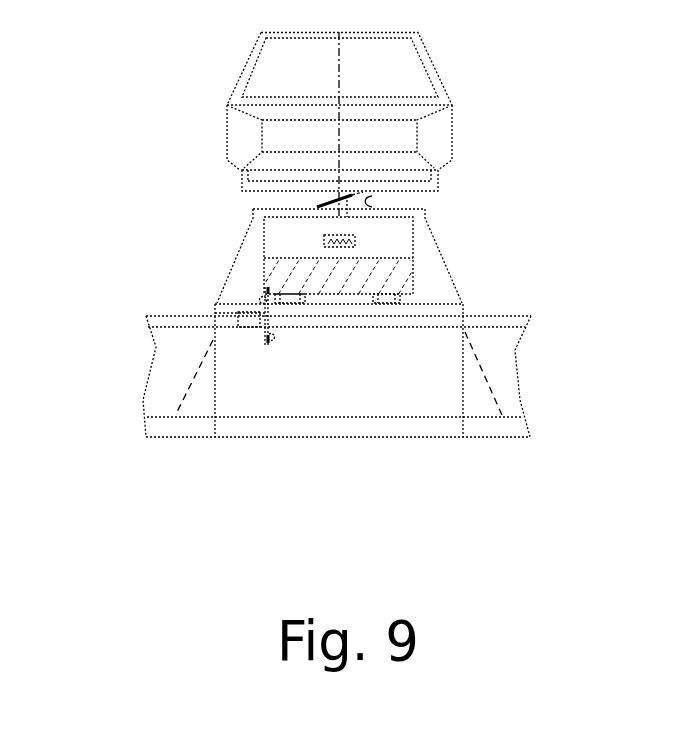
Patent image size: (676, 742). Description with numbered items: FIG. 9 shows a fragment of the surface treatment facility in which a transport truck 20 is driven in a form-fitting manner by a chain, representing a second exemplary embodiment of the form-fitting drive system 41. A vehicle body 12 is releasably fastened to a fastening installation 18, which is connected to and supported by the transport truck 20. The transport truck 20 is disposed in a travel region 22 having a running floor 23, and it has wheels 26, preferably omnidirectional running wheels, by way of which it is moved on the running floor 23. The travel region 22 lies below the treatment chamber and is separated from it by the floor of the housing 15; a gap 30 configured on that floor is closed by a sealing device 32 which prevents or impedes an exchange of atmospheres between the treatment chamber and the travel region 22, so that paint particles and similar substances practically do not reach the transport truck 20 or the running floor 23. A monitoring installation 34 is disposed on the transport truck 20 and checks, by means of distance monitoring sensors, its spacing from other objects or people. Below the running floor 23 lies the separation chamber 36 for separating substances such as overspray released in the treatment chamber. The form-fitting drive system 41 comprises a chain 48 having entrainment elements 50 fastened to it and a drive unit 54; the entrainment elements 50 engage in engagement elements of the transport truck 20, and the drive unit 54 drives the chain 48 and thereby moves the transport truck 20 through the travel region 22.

The vehicle body 12 is at (430, 58).
The housing 15 is at (239, 261).
The fastening installation 18 is at (372, 196).
The transport truck 20 is at (413, 280).
The travel region 22 is at (440, 292).
The running floor 23 is at (226, 309).
The wheels 26 is at (292, 304).
The gap 30 is at (366, 220).
The sealing device 32 is at (317, 207).
The monitoring installation 34 is at (323, 241).
The separation chamber 36 is at (128, 386).
The form-fitting drive system 41 is at (288, 349).
The chain 48 is at (268, 333).
The entrainment elements 50 is at (265, 289).
The drive unit 54 is at (236, 320).